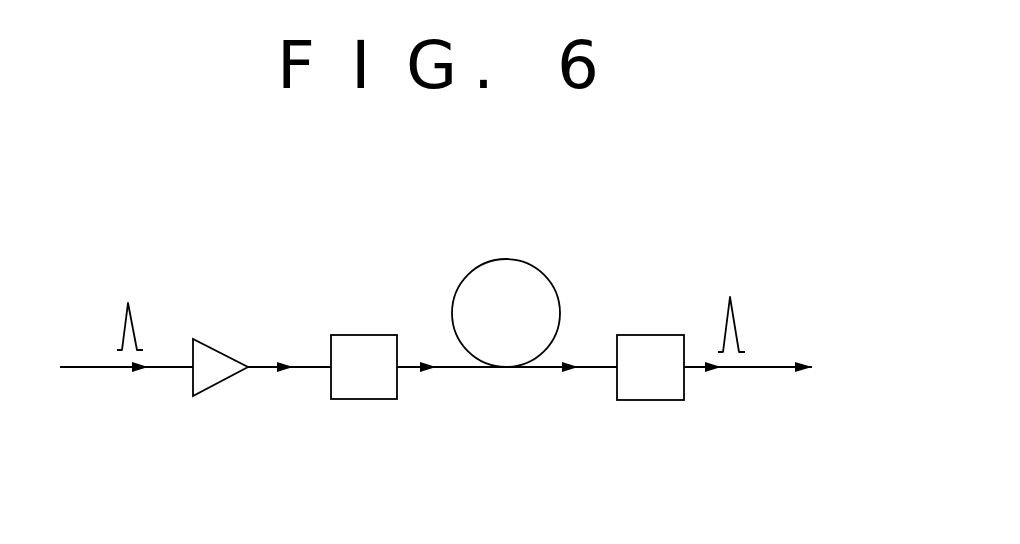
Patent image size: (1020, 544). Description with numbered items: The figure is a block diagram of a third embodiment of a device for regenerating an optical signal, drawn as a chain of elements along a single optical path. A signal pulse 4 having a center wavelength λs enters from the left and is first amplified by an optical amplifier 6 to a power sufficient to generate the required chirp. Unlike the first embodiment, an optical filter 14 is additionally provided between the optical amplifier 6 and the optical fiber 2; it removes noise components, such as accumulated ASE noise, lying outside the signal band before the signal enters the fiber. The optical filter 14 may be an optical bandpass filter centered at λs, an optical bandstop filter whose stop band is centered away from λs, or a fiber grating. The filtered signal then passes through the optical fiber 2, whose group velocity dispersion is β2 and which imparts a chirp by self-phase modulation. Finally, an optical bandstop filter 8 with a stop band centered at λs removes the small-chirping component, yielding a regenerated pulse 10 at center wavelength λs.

The optical fiber 2 is at (506, 259).
The signal pulse 4 is at (128, 301).
The optical amplifier 6 is at (212, 386).
The optical bandstop filter 8 is at (651, 400).
The regenerated pulse 10 is at (730, 296).
The optical filter 14 is at (364, 400).